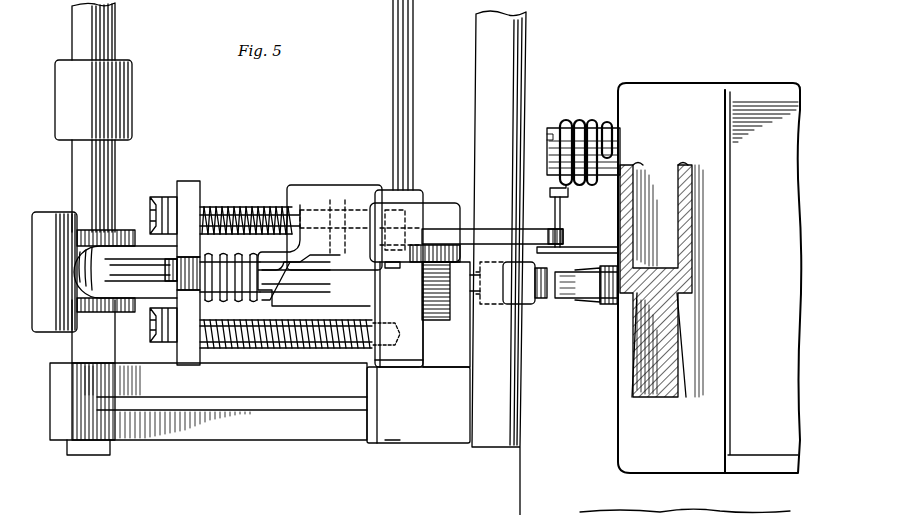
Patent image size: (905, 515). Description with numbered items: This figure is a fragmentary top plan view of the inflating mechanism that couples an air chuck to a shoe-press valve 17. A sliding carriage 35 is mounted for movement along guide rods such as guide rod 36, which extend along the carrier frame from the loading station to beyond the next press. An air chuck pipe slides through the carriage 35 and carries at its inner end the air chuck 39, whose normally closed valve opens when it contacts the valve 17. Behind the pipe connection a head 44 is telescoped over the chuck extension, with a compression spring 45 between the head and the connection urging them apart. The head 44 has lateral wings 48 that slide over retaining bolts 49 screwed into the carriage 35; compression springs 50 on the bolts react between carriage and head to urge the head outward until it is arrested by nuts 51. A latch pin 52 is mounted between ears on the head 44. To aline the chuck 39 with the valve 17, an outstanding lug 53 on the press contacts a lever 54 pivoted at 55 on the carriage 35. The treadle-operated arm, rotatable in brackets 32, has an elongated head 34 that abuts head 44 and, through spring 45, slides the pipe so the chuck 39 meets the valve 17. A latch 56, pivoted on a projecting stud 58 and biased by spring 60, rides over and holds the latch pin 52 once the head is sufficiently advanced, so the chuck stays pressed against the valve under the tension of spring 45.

The valve 17 is at (590, 300).
The brackets 32 is at (230, 432).
The head 34 is at (60, 212).
The sliding carriage 35 is at (410, 190).
The guide rod 36 is at (400, 44).
The air chuck 39 is at (532, 300).
The head 44 is at (125, 252).
The compression spring 45 is at (213, 255).
The lateral wings 48 is at (192, 181).
The retaining bolts 49 is at (248, 207).
The compression springs 50 is at (265, 207).
The nuts 51 is at (176, 180).
The latch pin 52 is at (172, 275).
The outstanding lug 53 is at (578, 242).
The lever 54 is at (446, 225).
The pivot 55 is at (390, 268).
The latch 56 is at (236, 300).
The projecting stud 58 is at (340, 188).
The spring 60 is at (302, 205).